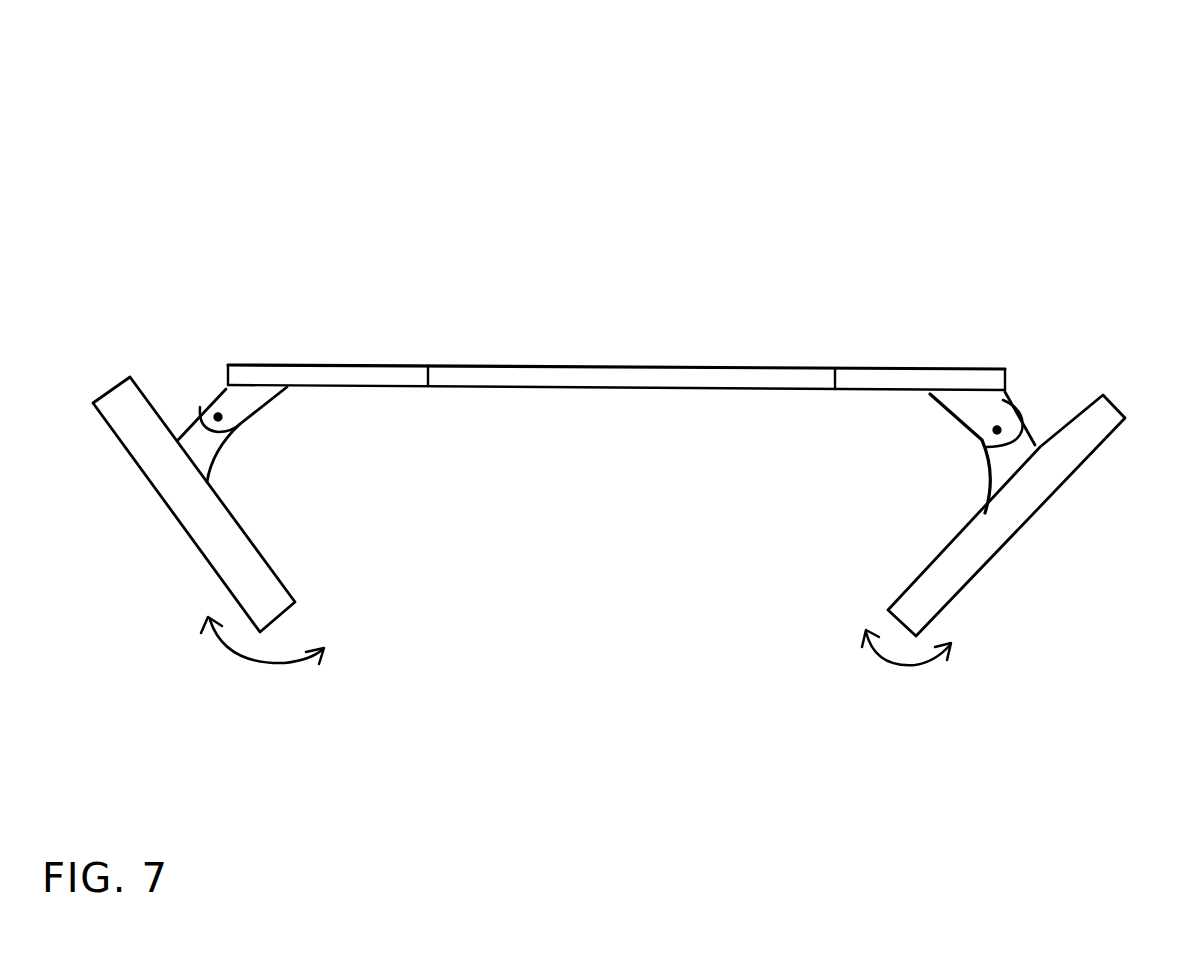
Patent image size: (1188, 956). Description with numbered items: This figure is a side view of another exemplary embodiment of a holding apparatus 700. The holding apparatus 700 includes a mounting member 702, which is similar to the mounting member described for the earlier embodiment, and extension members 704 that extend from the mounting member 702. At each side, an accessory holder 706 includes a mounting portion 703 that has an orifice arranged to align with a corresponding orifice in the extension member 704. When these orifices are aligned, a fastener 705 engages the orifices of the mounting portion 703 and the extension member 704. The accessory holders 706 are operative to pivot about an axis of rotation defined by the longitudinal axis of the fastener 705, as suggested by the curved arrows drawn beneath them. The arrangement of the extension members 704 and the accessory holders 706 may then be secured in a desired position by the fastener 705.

The holding apparatus 700 is at (1048, 99).
The mounting member 702 is at (670, 372).
The mounting portion 703 is at (177, 437).
The extension member 704 is at (224, 388).
The fastener 705 is at (240, 424).
The accessory holder 706 is at (231, 533).